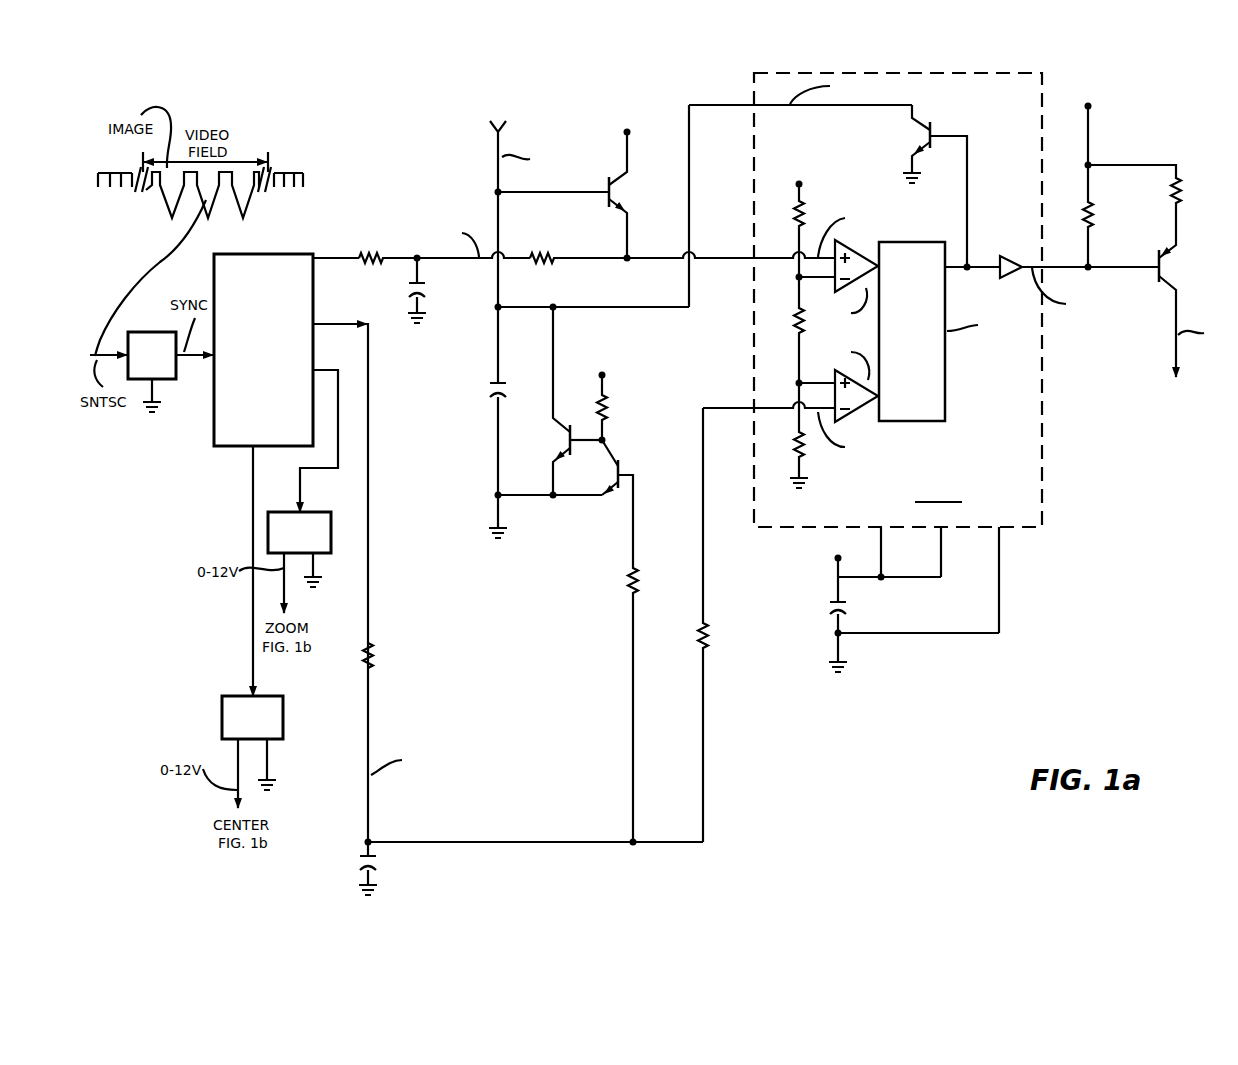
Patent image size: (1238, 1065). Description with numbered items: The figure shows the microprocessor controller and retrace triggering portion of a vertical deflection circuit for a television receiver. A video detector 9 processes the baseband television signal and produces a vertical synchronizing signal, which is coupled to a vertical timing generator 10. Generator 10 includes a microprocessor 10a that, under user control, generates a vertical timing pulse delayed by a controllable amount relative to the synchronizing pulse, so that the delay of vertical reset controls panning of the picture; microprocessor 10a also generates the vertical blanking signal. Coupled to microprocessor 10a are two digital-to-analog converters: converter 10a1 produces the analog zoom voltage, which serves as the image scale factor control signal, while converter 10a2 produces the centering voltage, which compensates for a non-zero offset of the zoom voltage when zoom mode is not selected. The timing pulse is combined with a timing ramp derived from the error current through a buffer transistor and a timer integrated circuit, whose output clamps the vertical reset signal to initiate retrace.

The video detector 9 is at (161, 331).
The vertical timing generator 10 is at (437, 583).
The microprocessor 10a is at (238, 254).
The digital-to-analog converter 10a1 is at (331, 528).
The digital-to-analog converter 10a2 is at (283, 708).